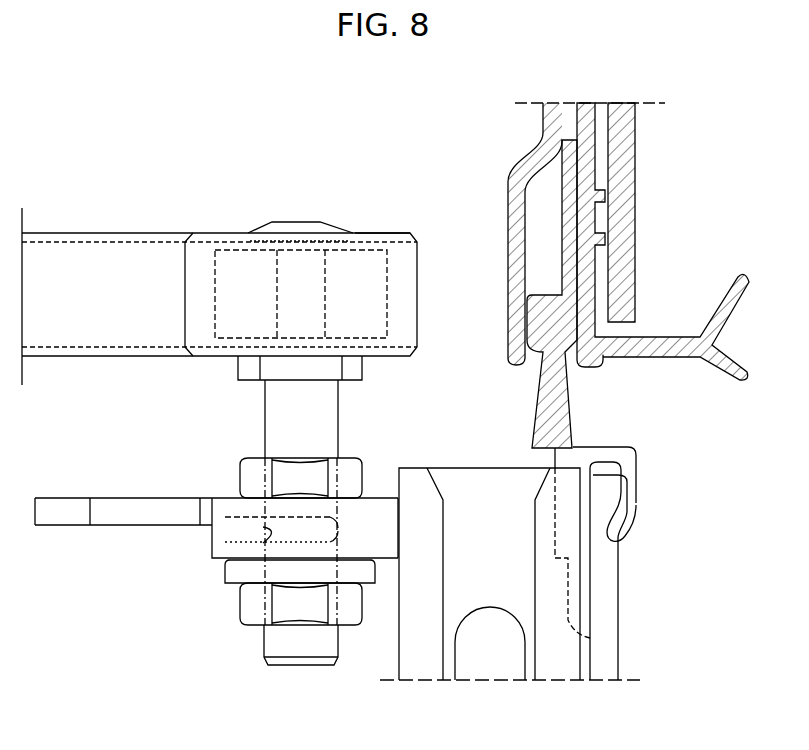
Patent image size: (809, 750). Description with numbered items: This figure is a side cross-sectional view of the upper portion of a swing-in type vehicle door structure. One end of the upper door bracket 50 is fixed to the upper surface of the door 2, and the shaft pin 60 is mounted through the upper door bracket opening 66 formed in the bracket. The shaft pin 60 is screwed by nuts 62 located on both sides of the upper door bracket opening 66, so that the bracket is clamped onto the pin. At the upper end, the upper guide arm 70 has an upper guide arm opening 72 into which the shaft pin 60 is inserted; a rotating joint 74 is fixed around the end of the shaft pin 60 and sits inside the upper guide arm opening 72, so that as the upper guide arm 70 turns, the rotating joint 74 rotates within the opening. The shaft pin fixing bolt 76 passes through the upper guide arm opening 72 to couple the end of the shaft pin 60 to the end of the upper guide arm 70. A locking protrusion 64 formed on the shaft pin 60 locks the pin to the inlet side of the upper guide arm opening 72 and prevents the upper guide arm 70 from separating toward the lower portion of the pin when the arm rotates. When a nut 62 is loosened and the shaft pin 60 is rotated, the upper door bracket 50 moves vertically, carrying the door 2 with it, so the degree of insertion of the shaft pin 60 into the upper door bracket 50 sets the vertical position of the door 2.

The door 2 is at (423, 658).
The upper door bracket 50 is at (220, 570).
The shaft pin 60 is at (268, 650).
The nut 62 is at (250, 470).
The locking protrusion 64 is at (358, 370).
The upper door bracket opening 66 is at (232, 568).
The upper guide arm 70 is at (418, 258).
The upper guide arm opening 72 is at (375, 232).
The rotating joint 74 is at (385, 292).
The shaft pin fixing bolt 76 is at (300, 228).